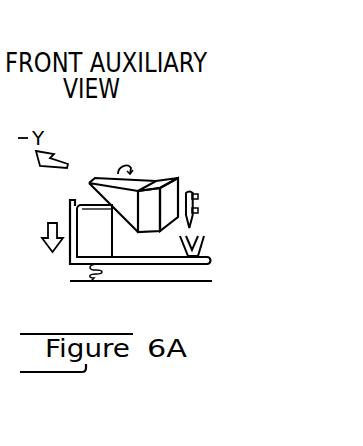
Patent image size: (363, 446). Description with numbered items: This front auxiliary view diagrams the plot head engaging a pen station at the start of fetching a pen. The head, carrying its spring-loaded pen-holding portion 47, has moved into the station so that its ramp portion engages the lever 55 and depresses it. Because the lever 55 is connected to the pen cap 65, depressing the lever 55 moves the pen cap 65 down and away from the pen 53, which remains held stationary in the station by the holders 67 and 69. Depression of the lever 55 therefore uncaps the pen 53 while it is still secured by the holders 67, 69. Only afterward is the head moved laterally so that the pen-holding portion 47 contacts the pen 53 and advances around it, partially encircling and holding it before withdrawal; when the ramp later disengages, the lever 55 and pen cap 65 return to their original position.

The spring-loaded pen-holding portion 47 is at (125, 165).
The pen 53 is at (190, 191).
The lever 55 is at (69, 202).
The pen cap 65 is at (203, 241).
The pen holder 67 is at (207, 190).
The pen holder 69 is at (207, 206).